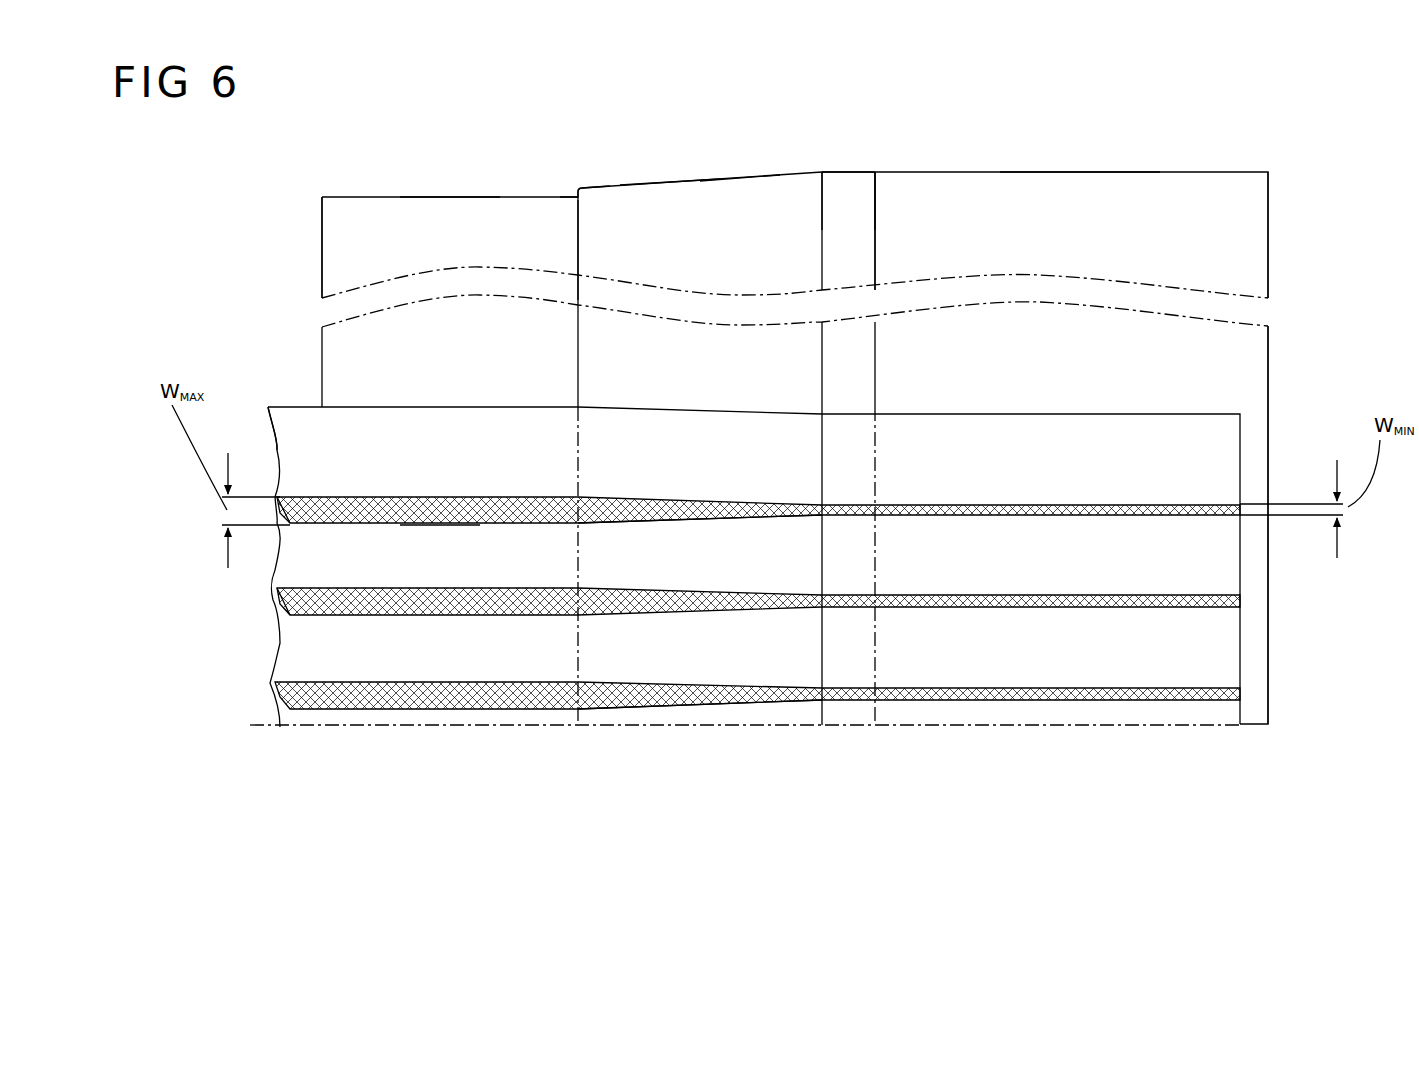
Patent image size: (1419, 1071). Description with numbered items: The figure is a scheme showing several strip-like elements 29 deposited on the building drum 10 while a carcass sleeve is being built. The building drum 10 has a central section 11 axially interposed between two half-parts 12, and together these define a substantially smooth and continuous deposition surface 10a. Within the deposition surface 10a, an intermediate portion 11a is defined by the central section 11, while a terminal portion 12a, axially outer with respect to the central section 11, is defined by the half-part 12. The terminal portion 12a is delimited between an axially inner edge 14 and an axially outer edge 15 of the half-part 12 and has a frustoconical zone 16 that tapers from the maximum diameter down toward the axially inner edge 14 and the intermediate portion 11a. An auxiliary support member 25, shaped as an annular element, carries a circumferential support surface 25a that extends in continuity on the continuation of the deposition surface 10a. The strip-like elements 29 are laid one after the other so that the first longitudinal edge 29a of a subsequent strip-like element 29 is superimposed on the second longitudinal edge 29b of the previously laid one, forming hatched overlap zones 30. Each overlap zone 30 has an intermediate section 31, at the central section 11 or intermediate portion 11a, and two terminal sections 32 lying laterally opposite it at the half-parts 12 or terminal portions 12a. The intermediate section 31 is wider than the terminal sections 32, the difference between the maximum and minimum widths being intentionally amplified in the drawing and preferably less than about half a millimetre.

The building drum 10 is at (402, 191).
The central section 11 is at (322, 232).
The intermediate portion 11a is at (472, 207).
The axially inner edge 14 is at (578, 233).
The deposition surface 10a is at (608, 200).
The frustoconical zone 16 is at (665, 180).
The terminal portion 12a is at (723, 195).
The half-part 12 is at (822, 172).
The axially outer edge 15 is at (877, 213).
The circumferential support surface 25a is at (1080, 195).
The auxiliary support member 25 is at (1270, 213).
The strip-like element 29 is at (357, 405).
The first longitudinal edge 29a is at (290, 445).
The second longitudinal edge 29b is at (432, 527).
The overlap zone 30 is at (607, 494).
The intermediate section 31 is at (343, 603).
The terminal section 32 is at (650, 507).